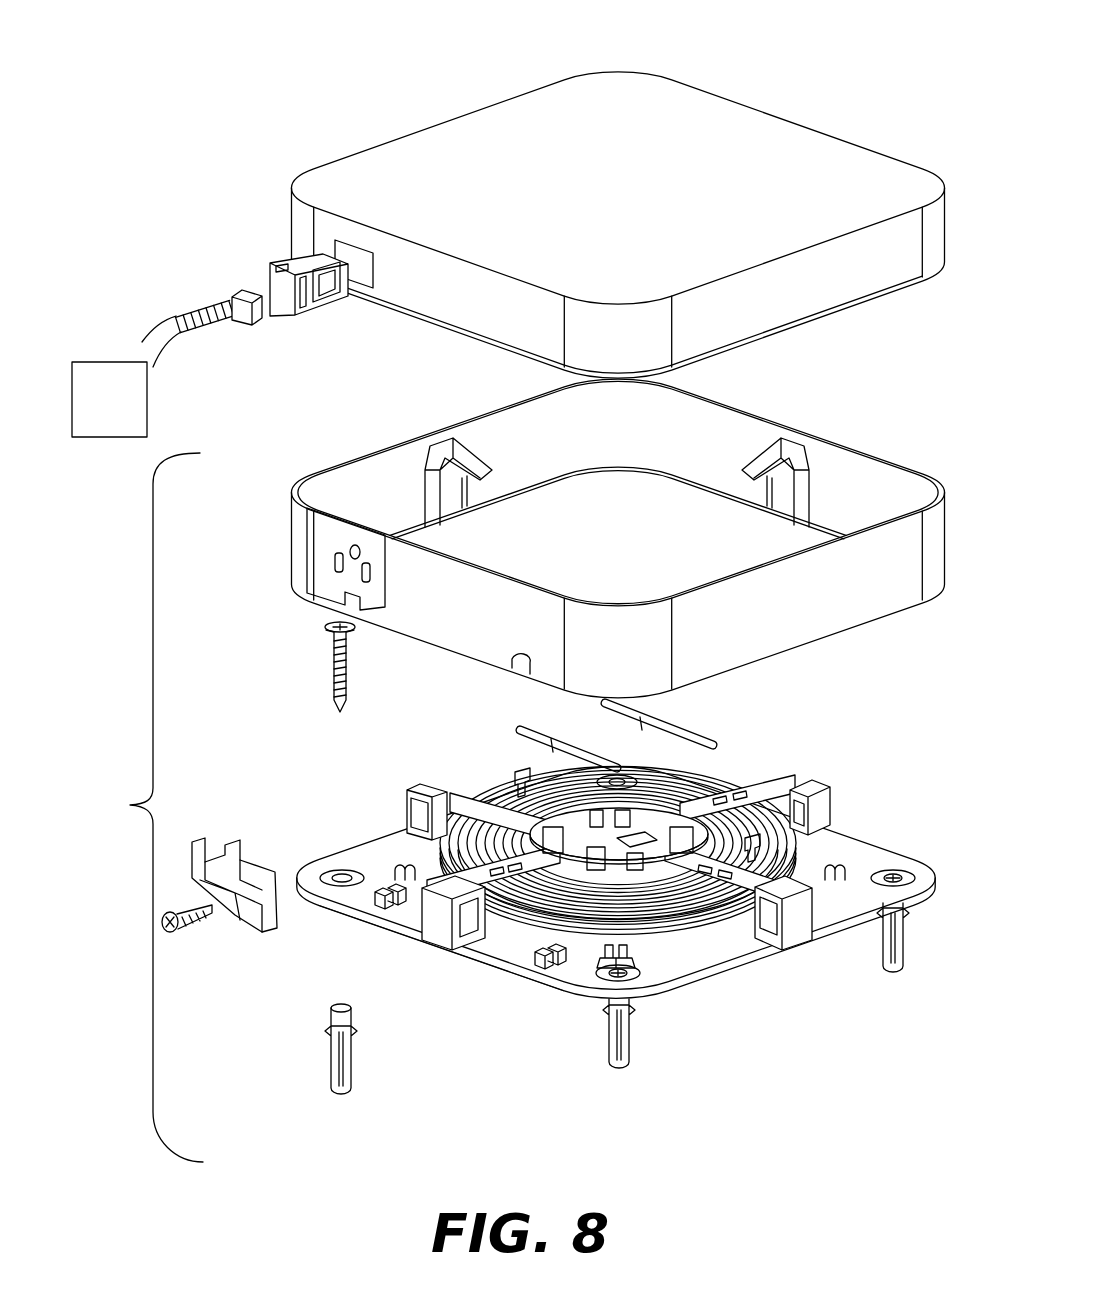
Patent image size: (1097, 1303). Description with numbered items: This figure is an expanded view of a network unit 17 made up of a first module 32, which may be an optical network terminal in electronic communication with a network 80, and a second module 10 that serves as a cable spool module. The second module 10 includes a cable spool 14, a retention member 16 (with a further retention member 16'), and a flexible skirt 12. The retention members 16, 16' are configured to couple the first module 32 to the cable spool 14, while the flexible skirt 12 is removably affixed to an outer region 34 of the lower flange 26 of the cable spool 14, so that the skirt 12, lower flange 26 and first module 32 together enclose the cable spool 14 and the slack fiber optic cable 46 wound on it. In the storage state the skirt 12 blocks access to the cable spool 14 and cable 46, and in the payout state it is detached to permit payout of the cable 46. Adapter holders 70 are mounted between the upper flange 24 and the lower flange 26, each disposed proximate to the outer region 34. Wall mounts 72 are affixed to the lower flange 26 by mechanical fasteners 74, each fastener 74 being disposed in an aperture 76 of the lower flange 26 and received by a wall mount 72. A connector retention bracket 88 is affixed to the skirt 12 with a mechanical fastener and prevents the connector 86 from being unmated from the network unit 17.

The second module 10 is at (130, 805).
The flexible skirt 12 is at (847, 475).
The cable spool 14 is at (898, 768).
The retention member 16 is at (611, 803).
The retention member 16' is at (581, 743).
The network unit 17 is at (246, 52).
The upper flange 24 is at (535, 795).
The lower flange 26 is at (675, 955).
The first module 32 is at (777, 140).
The outer region 34 is at (507, 960).
The slack fiber optic cable 46 is at (463, 853).
The adapter holder 70 is at (405, 810).
The wall mount 72 is at (333, 1077).
The mechanical fastener 74 is at (327, 662).
The aperture 76 is at (337, 877).
The network 80 is at (93, 378).
The connector 86 is at (225, 292).
The connector retention bracket 88 is at (200, 877).